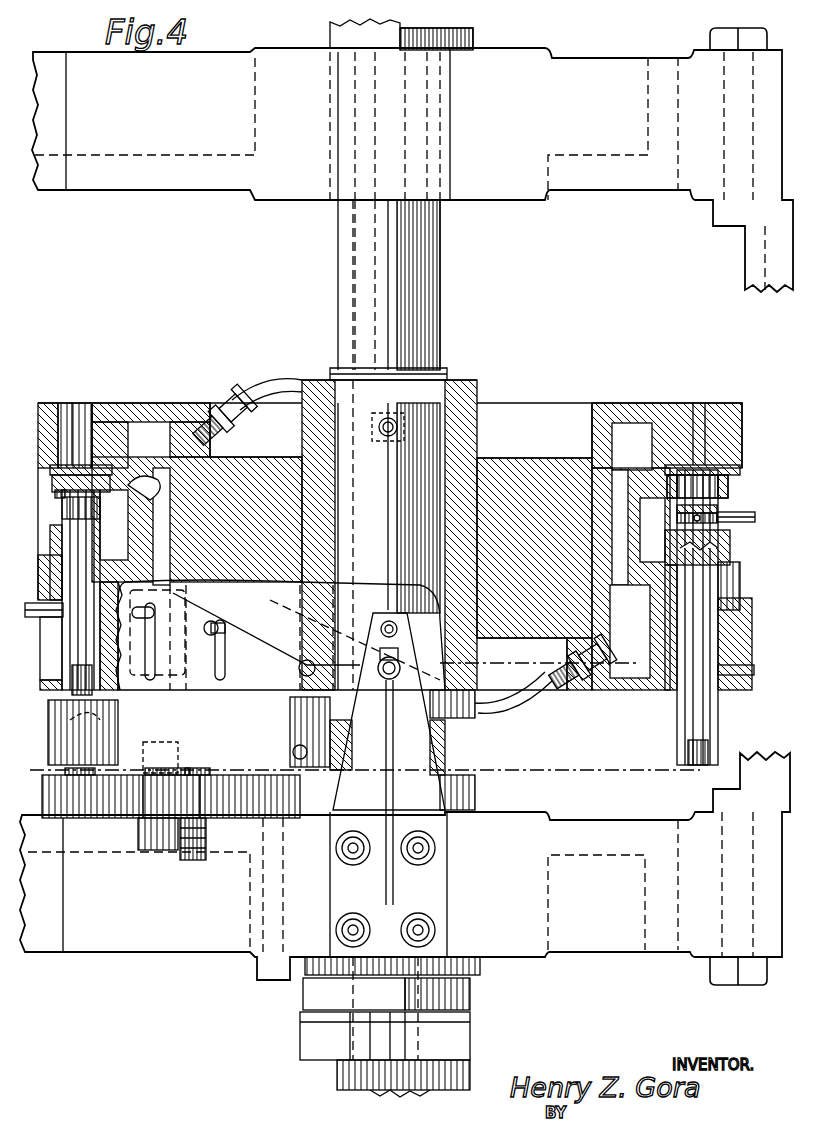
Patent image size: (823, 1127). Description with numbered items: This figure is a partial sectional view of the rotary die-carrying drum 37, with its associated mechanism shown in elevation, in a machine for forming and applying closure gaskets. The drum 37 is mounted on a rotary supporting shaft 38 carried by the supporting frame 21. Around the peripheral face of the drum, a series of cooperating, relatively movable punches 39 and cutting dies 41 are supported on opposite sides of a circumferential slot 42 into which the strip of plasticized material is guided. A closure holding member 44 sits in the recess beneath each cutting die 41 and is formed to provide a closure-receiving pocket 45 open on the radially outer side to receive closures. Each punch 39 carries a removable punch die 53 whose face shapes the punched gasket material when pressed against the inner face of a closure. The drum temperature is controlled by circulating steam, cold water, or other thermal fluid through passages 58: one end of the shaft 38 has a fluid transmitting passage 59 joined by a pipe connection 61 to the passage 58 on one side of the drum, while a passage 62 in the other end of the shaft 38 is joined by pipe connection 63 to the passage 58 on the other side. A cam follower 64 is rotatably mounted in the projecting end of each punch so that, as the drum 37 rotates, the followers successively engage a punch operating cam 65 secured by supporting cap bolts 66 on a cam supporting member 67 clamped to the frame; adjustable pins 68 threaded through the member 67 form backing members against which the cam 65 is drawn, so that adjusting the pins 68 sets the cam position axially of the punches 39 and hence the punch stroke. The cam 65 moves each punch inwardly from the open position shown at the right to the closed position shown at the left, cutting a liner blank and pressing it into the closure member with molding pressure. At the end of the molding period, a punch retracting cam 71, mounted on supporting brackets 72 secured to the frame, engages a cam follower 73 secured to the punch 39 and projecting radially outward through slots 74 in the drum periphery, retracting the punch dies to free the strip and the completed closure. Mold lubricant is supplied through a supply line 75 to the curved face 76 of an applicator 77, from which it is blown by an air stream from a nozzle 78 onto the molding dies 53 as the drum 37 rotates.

The supporting frame 21 is at (528, 82).
The rotary die-carrying drum 37 is at (632, 405).
The rotary supporting shaft 38 is at (442, 295).
The punch 39 is at (73, 551).
The cutting die 41 is at (58, 498).
The circumferential slot 42 is at (133, 512).
The closure holding member 44 is at (60, 464).
The closure-receiving pocket 45 is at (48, 483).
The punch die 53 is at (72, 510).
The passage 58 is at (160, 433).
The fluid transmitting passage 59 is at (370, 1075).
The pipe connection 61 is at (545, 700).
The passage 62 is at (372, 283).
The pipe connection 63 is at (237, 392).
The cam follower 64 is at (78, 686).
The punch operating cam 65 is at (60, 747).
The supporting cap bolt 66 is at (155, 843).
The cam supporting member 67 is at (52, 797).
The adjustable pin 68 is at (68, 774).
The punch retracting cam 71 is at (282, 650).
The supporting bracket 72 is at (415, 752).
The cam follower 73 is at (36, 612).
The slot 74 is at (50, 660).
The supply line 75 is at (745, 522).
The curved face 76 is at (705, 530).
The applicator 77 is at (718, 512).
The nozzle 78 is at (686, 521).